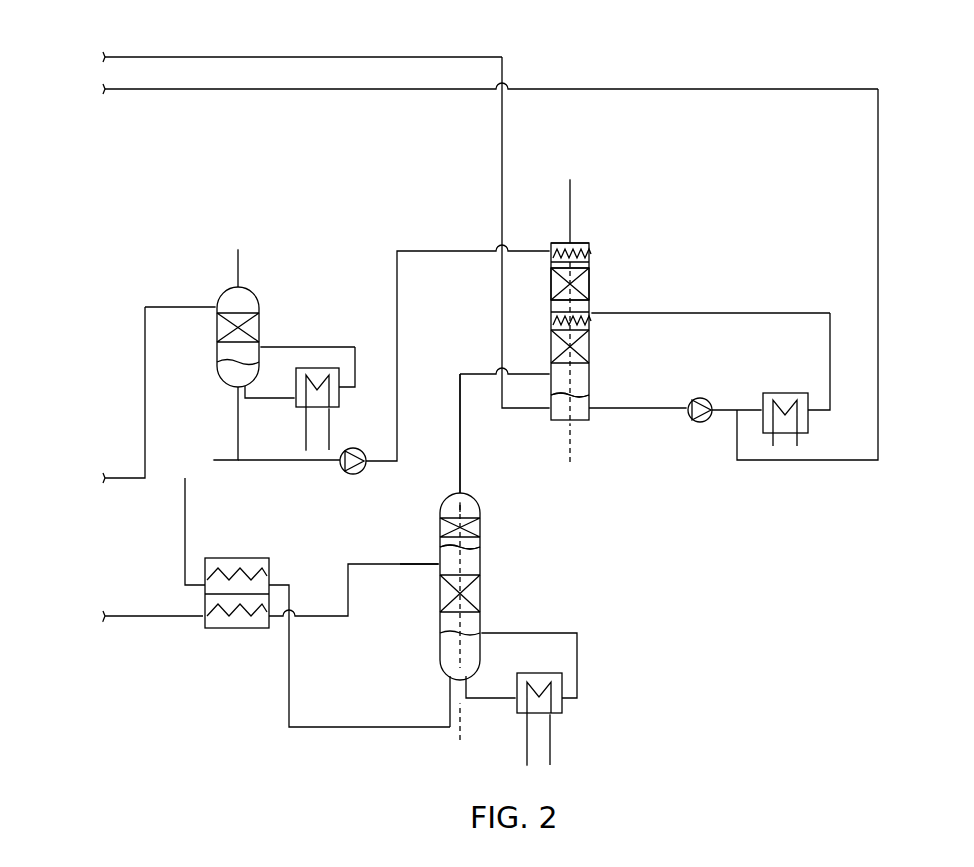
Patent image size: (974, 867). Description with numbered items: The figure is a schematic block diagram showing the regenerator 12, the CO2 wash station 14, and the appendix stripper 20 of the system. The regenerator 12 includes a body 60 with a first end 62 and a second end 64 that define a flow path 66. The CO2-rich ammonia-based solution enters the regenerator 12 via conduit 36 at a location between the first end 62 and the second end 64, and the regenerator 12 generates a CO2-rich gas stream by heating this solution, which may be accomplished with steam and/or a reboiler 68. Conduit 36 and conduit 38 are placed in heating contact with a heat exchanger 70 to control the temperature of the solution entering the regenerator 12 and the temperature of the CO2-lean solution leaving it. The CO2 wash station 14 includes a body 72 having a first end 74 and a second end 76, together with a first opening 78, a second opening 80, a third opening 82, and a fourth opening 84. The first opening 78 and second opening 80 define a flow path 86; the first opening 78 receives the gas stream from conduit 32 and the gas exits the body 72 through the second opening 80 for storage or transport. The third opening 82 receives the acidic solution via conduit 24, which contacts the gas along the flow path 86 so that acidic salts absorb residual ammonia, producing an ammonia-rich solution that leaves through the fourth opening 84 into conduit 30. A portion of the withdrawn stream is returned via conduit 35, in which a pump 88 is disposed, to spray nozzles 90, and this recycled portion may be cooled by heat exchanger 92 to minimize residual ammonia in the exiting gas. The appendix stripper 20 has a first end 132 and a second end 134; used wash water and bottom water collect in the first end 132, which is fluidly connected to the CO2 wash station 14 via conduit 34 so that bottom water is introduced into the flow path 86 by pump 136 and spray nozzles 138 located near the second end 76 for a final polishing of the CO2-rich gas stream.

The regenerator 12 is at (494, 523).
The CO2 wash station 14 is at (602, 236).
The appendix stripper 20 is at (221, 282).
The conduit 24 is at (365, 56).
The conduit 30 is at (880, 264).
The conduit 32 is at (460, 410).
The conduit 34 is at (397, 318).
The conduit 35 is at (635, 315).
The conduit 36 is at (348, 560).
The conduit 38 is at (380, 727).
The body 60 is at (440, 545).
The first end 62 is at (480, 724).
The second end 64 is at (451, 494).
The flow path 66 is at (477, 547).
The reboiler 68 is at (574, 718).
The heat exchanger 70 is at (238, 557).
The body 72 is at (592, 272).
The first end 74 is at (569, 454).
The second end 76 is at (559, 218).
The first opening 78 is at (549, 373).
The second opening 80 is at (573, 245).
The third opening 82 is at (553, 420).
The fourth opening 84 is at (590, 398).
The flow path 86 is at (553, 330).
The pump 88 is at (700, 398).
The spray nozzles 90 is at (592, 311).
The heat exchanger 92 is at (784, 393).
The first end 132 is at (212, 382).
The second end 134 is at (257, 282).
The pump 136 is at (357, 448).
The spray nozzles 138 is at (553, 250).